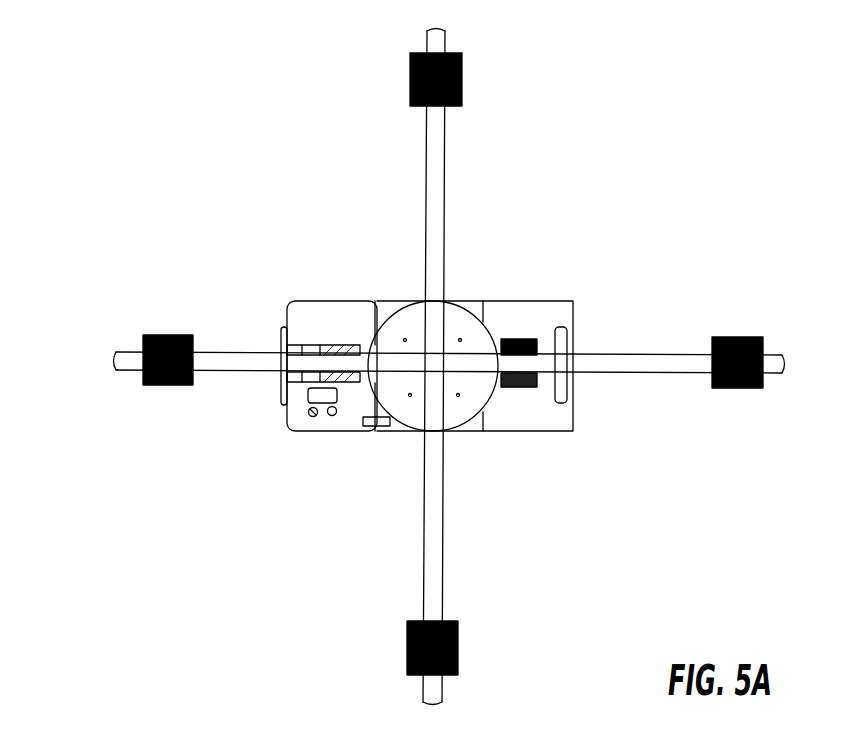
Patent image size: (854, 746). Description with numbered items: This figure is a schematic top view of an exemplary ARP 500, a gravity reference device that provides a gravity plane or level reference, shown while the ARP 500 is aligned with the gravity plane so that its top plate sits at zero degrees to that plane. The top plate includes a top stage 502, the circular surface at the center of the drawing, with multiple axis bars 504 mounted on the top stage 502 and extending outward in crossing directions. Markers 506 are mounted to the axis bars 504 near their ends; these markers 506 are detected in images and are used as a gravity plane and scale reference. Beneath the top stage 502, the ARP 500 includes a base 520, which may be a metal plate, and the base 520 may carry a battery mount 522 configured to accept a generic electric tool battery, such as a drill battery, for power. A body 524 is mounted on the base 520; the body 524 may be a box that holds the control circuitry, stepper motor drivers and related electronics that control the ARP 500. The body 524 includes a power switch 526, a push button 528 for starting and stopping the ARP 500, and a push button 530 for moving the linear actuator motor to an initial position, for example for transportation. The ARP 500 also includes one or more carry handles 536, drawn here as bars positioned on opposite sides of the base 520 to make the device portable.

The ARP 500 is at (131, 46).
The top stage 502 is at (407, 323).
The axis bars 504 is at (445, 226).
The markers 506 is at (410, 82).
The base 520 is at (573, 432).
The battery mount 522 is at (517, 387).
The body 524 is at (317, 317).
The power switch 526 is at (308, 393).
The push button 528 is at (300, 417).
The push button 530 is at (335, 427).
The carry handles 536 is at (280, 330).